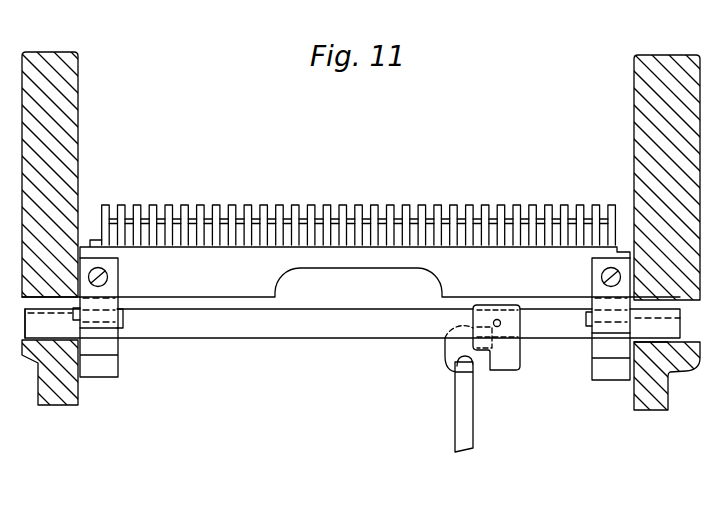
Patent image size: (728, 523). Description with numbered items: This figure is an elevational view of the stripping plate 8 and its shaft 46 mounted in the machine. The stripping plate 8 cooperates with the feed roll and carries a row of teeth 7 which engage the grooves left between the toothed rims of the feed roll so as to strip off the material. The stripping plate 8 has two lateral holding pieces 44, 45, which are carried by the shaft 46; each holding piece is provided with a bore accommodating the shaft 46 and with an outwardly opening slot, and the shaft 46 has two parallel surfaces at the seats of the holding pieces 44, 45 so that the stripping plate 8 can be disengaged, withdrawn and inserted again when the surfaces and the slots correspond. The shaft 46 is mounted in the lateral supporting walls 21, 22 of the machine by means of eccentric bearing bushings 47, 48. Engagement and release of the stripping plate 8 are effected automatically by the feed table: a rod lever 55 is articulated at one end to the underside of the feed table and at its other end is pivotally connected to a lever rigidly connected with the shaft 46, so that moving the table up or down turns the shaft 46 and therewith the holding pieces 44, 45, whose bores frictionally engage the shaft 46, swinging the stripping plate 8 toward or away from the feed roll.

The teeth 7 is at (390, 208).
The stripping plate 8 is at (197, 265).
The lateral supporting wall 21 is at (642, 133).
The lateral supporting wall 22 is at (70, 133).
The holding piece 44 is at (108, 368).
The holding piece 45 is at (605, 370).
The shaft 46 is at (288, 330).
The eccentric bearing bushing 47 is at (48, 299).
The eccentric bearing bushing 48 is at (668, 340).
The rod lever 55 is at (458, 420).